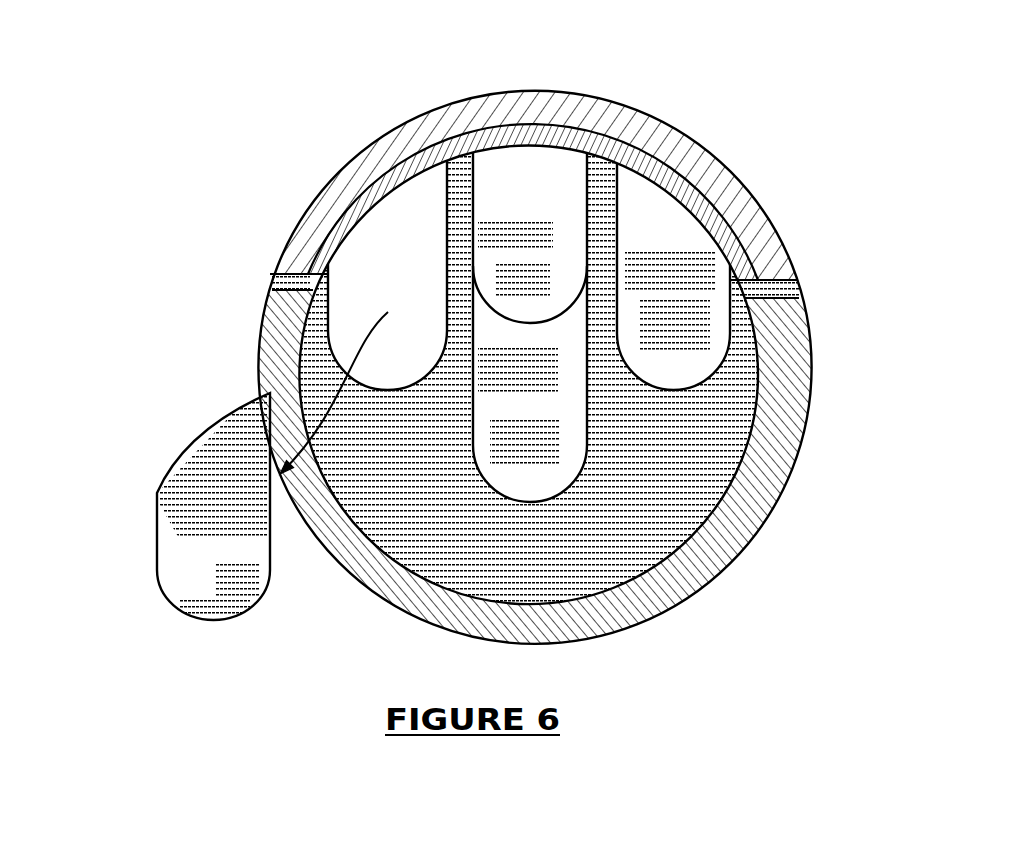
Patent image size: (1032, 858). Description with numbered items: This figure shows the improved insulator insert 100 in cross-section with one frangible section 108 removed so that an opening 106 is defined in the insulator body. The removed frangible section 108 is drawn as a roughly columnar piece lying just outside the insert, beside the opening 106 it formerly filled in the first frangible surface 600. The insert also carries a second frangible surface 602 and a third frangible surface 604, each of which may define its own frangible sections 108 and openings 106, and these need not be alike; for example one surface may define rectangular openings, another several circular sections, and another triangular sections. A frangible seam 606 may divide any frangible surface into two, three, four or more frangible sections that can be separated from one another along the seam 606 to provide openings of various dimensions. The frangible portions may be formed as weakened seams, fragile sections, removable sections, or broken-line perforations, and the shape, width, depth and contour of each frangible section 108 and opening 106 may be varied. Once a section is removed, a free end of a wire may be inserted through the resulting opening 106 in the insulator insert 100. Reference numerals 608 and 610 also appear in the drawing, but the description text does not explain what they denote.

The insulator insert 100 is at (715, 117).
The opening 106 is at (390, 247).
The frangible section 108 is at (170, 572).
The first frangible surface 600 is at (353, 277).
The second frangible surface 602 is at (677, 252).
The third frangible surface 604 is at (527, 180).
The frangible seam 606 is at (527, 327).
The lumen septum 608 is at (548, 248).
The lower wall 610 is at (527, 460).